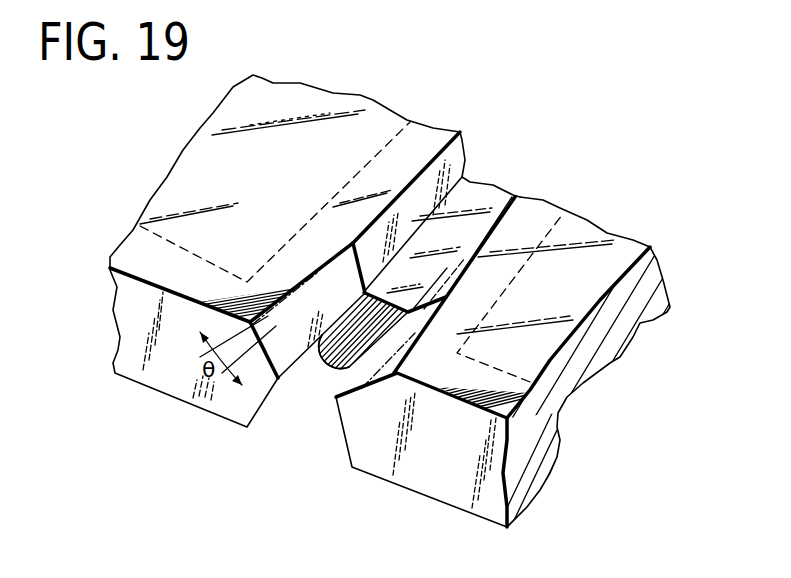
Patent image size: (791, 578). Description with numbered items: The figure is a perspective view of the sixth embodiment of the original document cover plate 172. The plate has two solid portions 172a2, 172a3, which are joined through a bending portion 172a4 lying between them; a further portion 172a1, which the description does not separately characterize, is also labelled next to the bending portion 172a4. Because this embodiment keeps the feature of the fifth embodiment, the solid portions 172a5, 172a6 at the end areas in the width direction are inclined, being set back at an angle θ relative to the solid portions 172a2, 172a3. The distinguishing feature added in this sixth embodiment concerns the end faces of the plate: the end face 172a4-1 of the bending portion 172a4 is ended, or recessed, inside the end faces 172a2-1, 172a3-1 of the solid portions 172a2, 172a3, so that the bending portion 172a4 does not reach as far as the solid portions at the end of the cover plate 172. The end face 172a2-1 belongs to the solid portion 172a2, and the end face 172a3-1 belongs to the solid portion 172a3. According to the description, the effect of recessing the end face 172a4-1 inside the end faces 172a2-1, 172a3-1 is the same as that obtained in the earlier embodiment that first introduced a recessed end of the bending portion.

The cutting insert body 172 is at (590, 237).
The right inclined groove face 172a1 is at (485, 200).
The solid portion 172a2 is at (410, 213).
The solid portion 172a3 is at (516, 194).
The bending portion 172a4 is at (328, 346).
The end face of the bending portion 172a4-1 is at (337, 364).
The left inclined groove face 172a5 is at (326, 292).
The right top land face 172a6 is at (427, 334).
The end face of the solid portion 172a2-1 is at (160, 363).
The end face of the solid portion 172a3-1 is at (417, 470).